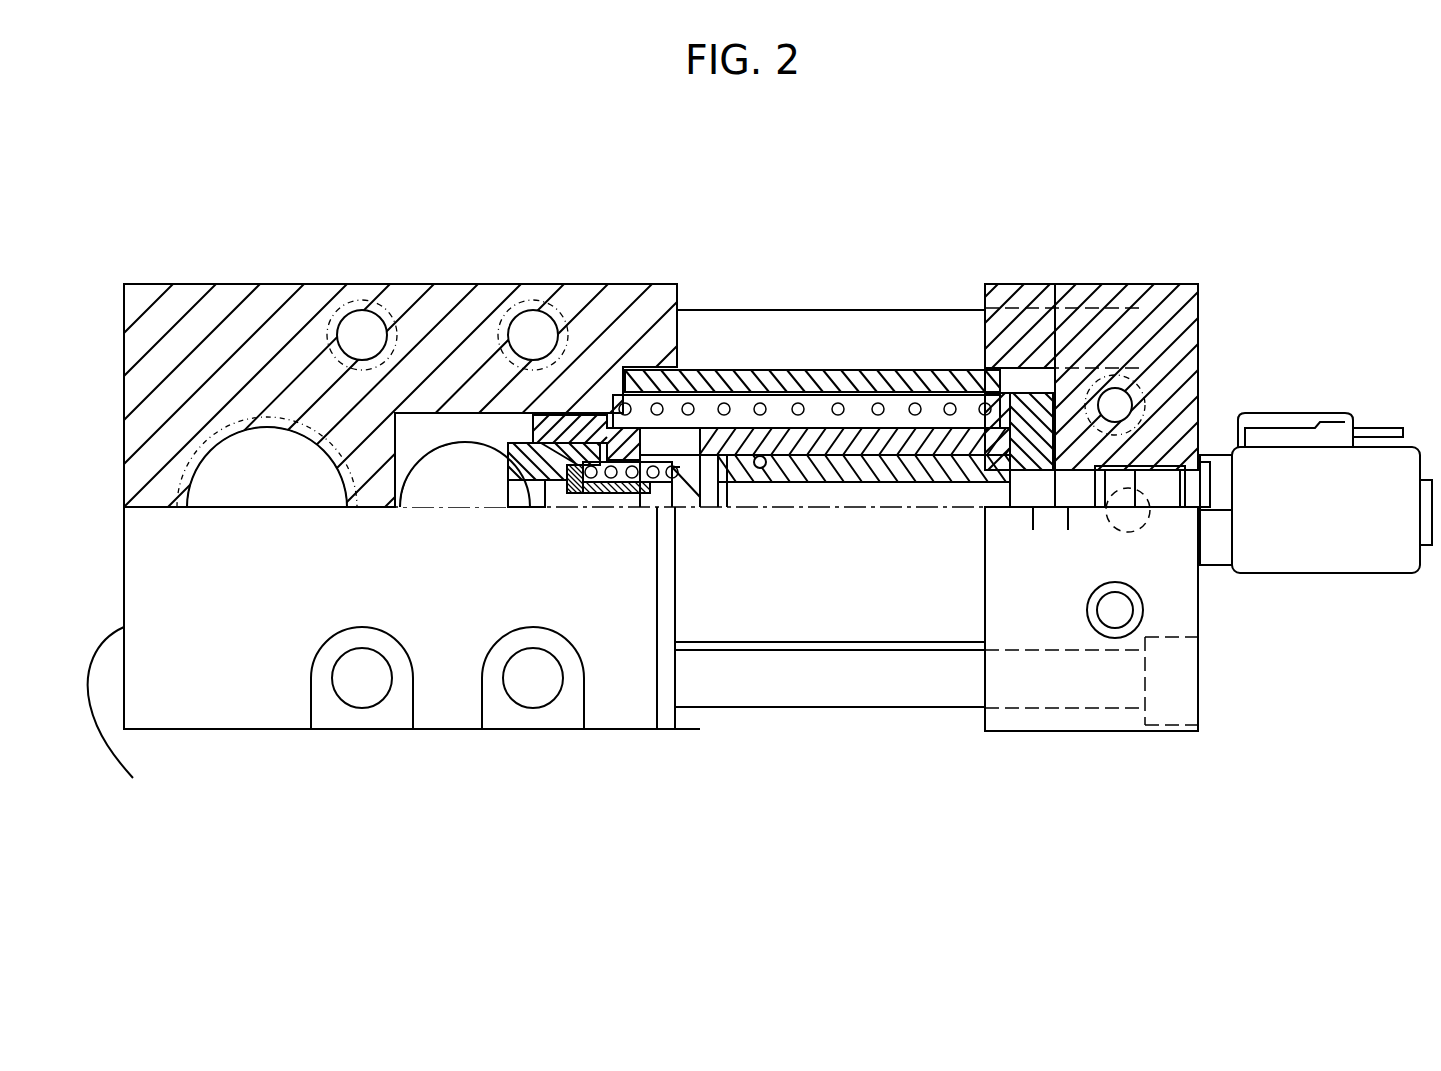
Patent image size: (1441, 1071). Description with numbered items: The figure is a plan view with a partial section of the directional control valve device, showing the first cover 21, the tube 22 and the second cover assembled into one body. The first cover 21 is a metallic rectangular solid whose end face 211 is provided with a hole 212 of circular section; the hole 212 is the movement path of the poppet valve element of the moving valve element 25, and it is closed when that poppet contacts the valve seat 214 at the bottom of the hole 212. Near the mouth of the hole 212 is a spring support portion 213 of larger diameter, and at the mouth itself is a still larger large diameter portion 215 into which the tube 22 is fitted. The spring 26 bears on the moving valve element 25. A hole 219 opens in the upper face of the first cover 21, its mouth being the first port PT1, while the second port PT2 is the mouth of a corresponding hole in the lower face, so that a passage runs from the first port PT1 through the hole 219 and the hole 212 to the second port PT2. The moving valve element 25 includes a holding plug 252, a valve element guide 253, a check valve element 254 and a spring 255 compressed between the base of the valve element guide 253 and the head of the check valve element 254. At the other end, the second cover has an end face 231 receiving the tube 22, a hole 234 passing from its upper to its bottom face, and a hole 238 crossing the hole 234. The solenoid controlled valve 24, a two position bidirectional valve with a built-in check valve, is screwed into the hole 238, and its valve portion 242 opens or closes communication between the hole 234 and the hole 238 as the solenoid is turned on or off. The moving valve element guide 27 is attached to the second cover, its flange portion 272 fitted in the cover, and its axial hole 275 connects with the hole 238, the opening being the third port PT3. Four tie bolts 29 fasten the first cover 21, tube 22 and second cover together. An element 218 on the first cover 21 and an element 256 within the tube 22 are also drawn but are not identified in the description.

The first cover 21 is at (265, 735).
The end face 211 is at (680, 731).
The hole 212 is at (425, 425).
The spring support portion 213 is at (633, 375).
The valve seat 214 is at (372, 440).
The large diameter portion 215 is at (690, 395).
The body side wall 218 is at (127, 735).
The hole 219 is at (262, 462).
The tube 22 is at (758, 398).
The solenoid controlled valve 24 is at (1335, 578).
The valve portion 242 is at (1125, 470).
The moving valve element 25 is at (891, 426).
The holding plug 252 is at (515, 470).
The valve element guide 253 is at (600, 495).
The check valve element 254 is at (675, 503).
The spring 255 is at (657, 507).
The return spring 256 is at (838, 403).
The spring 26 is at (775, 365).
The moving valve element guide 27 is at (915, 470).
The flange portion 272 is at (1053, 330).
The hole 275 is at (920, 500).
The tie bolts 29 is at (960, 310).
The end face 231 is at (985, 725).
The hole 234 is at (1135, 530).
The hole 238 is at (1068, 507).
The first port PT1 is at (262, 465).
The second port PT2 is at (480, 458).
The third port PT3 is at (1033, 507).